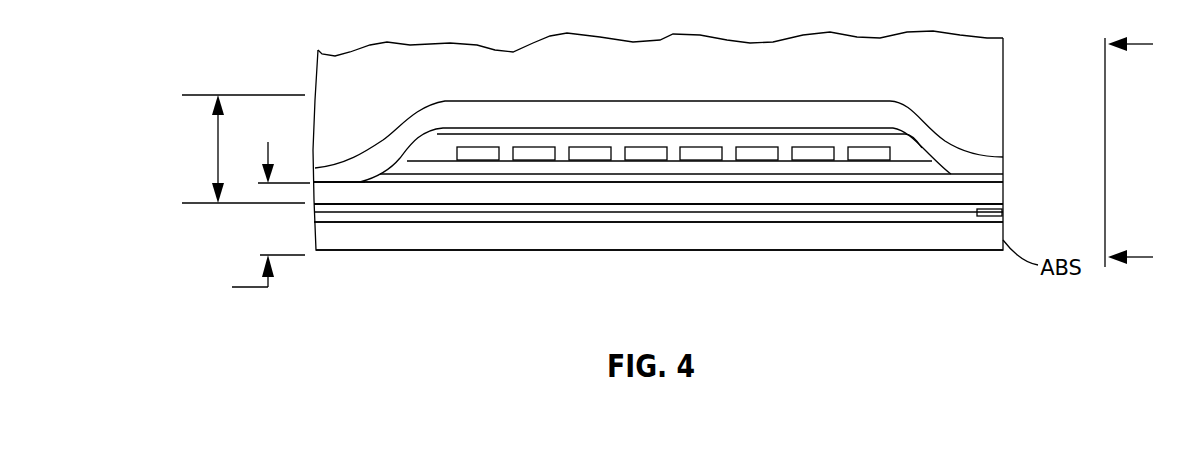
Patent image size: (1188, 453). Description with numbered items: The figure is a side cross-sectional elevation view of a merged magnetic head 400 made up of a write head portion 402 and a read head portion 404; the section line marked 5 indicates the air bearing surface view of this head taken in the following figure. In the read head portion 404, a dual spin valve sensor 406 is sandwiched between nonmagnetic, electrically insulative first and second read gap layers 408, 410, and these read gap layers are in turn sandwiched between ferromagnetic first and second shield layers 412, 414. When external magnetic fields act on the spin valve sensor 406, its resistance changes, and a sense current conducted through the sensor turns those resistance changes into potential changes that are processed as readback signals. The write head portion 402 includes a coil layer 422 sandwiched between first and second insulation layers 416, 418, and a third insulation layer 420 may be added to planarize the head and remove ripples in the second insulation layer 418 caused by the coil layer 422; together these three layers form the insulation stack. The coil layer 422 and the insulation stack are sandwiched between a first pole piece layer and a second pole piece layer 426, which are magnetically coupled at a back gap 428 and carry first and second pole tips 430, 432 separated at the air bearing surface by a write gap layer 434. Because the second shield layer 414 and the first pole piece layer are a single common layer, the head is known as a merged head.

The merged magnetic head 400 is at (290, 65).
The write head portion 402 is at (207, 149).
The read head portion 404 is at (219, 296).
The dual spin valve sensor 406 is at (1003, 218).
The first read gap layer 408 is at (717, 223).
The second read gap layer 410 is at (681, 205).
The first shield layer 412 is at (780, 238).
The second shield layer 414 is at (867, 195).
The first insulation layer 416 is at (593, 170).
The second insulation layer 418 is at (903, 152).
The third insulation layer 420 is at (505, 127).
The coil layer 422 is at (632, 147).
The second pole piece layer 426 is at (793, 113).
The back gap 428 is at (348, 183).
The first pole tip 430 is at (1002, 193).
The second pole tip 432 is at (998, 165).
The write gap layer 434 is at (1000, 178).
The section line for FIG. 5 is at (1146, 151).